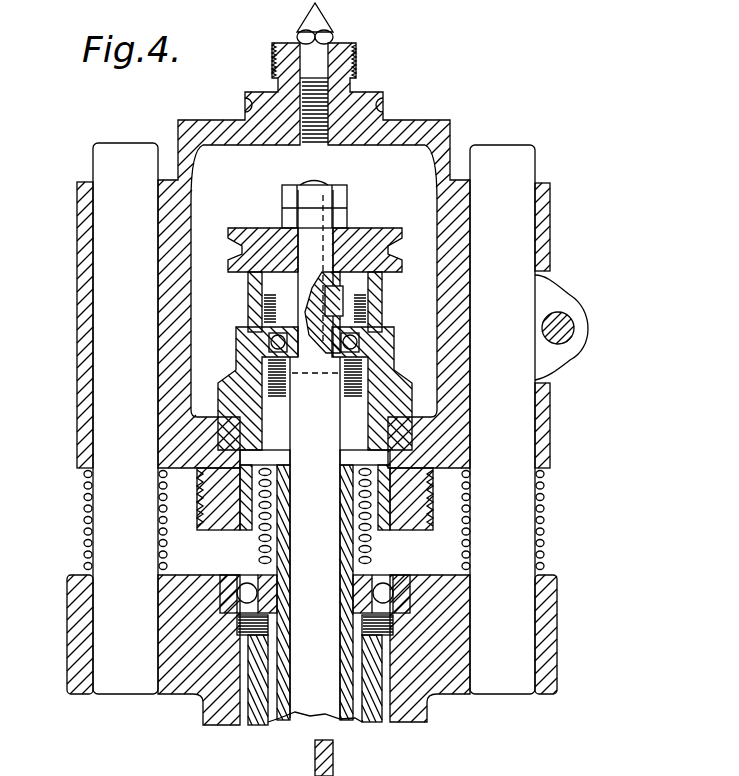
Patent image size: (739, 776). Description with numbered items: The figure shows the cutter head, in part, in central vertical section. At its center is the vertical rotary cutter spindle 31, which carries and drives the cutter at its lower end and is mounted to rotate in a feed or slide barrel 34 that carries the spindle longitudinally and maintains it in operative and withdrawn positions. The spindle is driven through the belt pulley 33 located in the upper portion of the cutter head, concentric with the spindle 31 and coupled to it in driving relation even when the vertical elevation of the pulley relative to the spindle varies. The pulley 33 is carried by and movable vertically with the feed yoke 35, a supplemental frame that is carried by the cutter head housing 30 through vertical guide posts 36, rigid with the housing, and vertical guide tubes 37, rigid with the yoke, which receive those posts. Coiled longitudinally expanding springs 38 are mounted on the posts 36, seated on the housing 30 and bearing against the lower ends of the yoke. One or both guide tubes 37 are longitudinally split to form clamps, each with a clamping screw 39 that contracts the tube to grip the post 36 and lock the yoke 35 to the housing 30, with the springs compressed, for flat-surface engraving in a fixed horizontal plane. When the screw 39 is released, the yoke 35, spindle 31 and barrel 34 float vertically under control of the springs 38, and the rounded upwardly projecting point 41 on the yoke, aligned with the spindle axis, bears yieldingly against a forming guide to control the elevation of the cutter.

The cutter head housing 30 is at (455, 682).
The vertical rotary cutter spindle 31 is at (305, 712).
The belt pulley 33 is at (412, 212).
The feed or slide barrel 34 is at (250, 716).
The feed yoke 35 is at (413, 127).
The vertical guide posts 36 is at (314, 418).
The vertical guide tubes 37 is at (77, 367).
The coiled longitudinally expanding springs 38 is at (84, 525).
The clamping screw 39 is at (574, 328).
The upwardly projecting point 41 is at (318, 23).